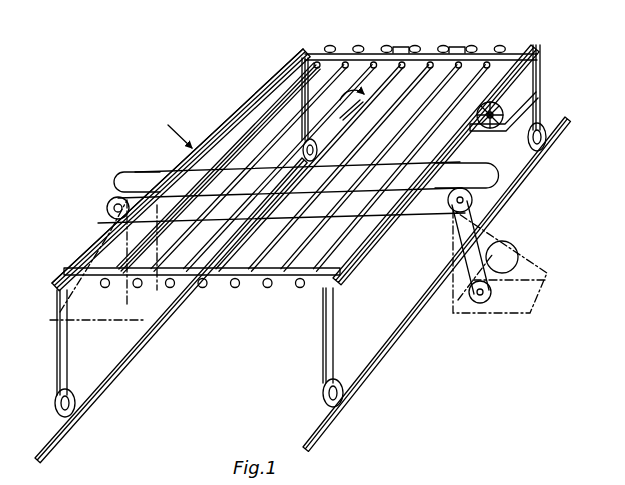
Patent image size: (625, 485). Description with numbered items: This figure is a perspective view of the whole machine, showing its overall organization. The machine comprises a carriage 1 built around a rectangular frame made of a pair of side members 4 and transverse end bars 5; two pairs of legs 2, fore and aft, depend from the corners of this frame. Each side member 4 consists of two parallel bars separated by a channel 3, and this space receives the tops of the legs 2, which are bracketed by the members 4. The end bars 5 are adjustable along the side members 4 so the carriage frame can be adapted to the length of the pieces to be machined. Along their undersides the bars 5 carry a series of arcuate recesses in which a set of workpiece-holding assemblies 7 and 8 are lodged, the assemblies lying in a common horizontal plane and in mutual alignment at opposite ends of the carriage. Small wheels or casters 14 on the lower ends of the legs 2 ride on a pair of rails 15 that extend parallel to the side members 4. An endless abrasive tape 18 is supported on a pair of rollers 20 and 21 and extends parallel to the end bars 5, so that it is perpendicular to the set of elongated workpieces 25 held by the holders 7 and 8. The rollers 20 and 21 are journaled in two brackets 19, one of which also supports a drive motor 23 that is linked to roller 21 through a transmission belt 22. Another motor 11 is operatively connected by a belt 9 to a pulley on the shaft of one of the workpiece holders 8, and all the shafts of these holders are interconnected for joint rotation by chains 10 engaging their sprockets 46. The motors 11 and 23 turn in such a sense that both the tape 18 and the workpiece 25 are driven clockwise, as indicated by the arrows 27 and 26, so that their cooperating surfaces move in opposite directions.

The carriage 1 is at (174, 127).
The legs 2 is at (300, 90).
The channel 3 is at (210, 135).
The side members 4 is at (275, 68).
The transverse end bars 5 is at (430, 47).
The workpiece-holding assemblies 7 is at (172, 289).
The workpiece-holding assemblies 8 is at (384, 45).
The belt 9 is at (470, 140).
The chains 10 is at (403, 46).
The motor 11 is at (505, 100).
The small wheels or casters 14 is at (300, 150).
The rails 15 is at (107, 395).
The endless abrasive tape 18 is at (217, 183).
The brackets 19 is at (70, 321).
The roller 20 is at (107, 207).
The roller 21 is at (472, 200).
The transmission belt 22 is at (518, 262).
The drive motor 23 is at (492, 295).
The elongated workpieces 25 is at (120, 258).
The arrow 26 is at (328, 46).
The arrow 27 is at (122, 184).
The sprockets 46 is at (356, 45).